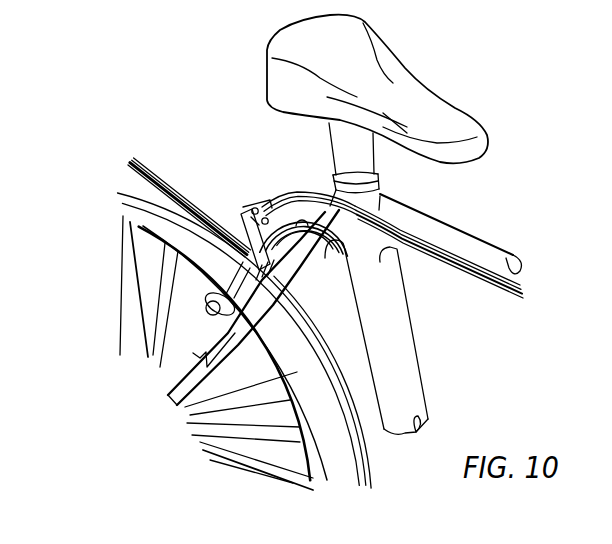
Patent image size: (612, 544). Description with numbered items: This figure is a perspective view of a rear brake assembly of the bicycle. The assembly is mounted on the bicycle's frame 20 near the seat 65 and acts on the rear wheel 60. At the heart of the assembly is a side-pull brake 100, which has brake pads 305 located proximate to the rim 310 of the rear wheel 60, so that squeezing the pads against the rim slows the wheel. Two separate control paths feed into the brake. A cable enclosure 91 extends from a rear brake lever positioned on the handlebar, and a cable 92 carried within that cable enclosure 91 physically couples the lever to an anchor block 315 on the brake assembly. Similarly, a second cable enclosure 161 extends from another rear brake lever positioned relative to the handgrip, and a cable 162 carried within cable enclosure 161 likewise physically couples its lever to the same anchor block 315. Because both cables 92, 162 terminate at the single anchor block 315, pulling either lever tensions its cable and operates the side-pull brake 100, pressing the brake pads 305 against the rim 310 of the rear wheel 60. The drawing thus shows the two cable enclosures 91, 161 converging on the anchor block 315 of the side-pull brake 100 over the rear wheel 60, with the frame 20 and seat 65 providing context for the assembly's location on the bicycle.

The frame 20 is at (493, 247).
The rear wheel 60 is at (143, 173).
The seat 65 is at (405, 58).
The cable enclosure 91 is at (298, 200).
The cable 92 is at (249, 228).
The side-pull brake 100 is at (300, 282).
The cable enclosure 161 is at (331, 176).
The cable 162 is at (292, 275).
The brake pads 305 is at (200, 298).
The rim 310 is at (150, 232).
The anchor block 315 is at (235, 230).